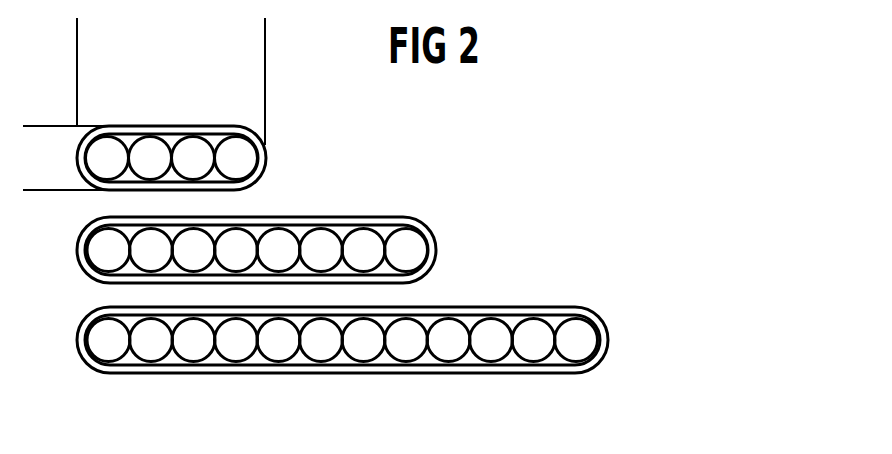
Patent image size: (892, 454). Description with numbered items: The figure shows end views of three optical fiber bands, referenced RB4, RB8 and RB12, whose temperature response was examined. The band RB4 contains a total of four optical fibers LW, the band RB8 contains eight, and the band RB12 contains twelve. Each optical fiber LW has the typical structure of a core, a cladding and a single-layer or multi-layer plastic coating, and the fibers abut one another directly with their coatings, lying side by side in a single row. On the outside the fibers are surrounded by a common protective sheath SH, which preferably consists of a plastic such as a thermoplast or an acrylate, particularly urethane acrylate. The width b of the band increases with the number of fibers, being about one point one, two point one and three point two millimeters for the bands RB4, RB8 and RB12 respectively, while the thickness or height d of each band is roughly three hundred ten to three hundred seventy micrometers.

The optical fiber band RB4 is at (242, 123).
The optical fiber band RB8 is at (326, 244).
The optical fiber band RB12 is at (420, 333).
The optical fibers LW is at (129, 123).
The protective sheath SH is at (214, 132).
The width b is at (243, 27).
The thickness d is at (33, 75).